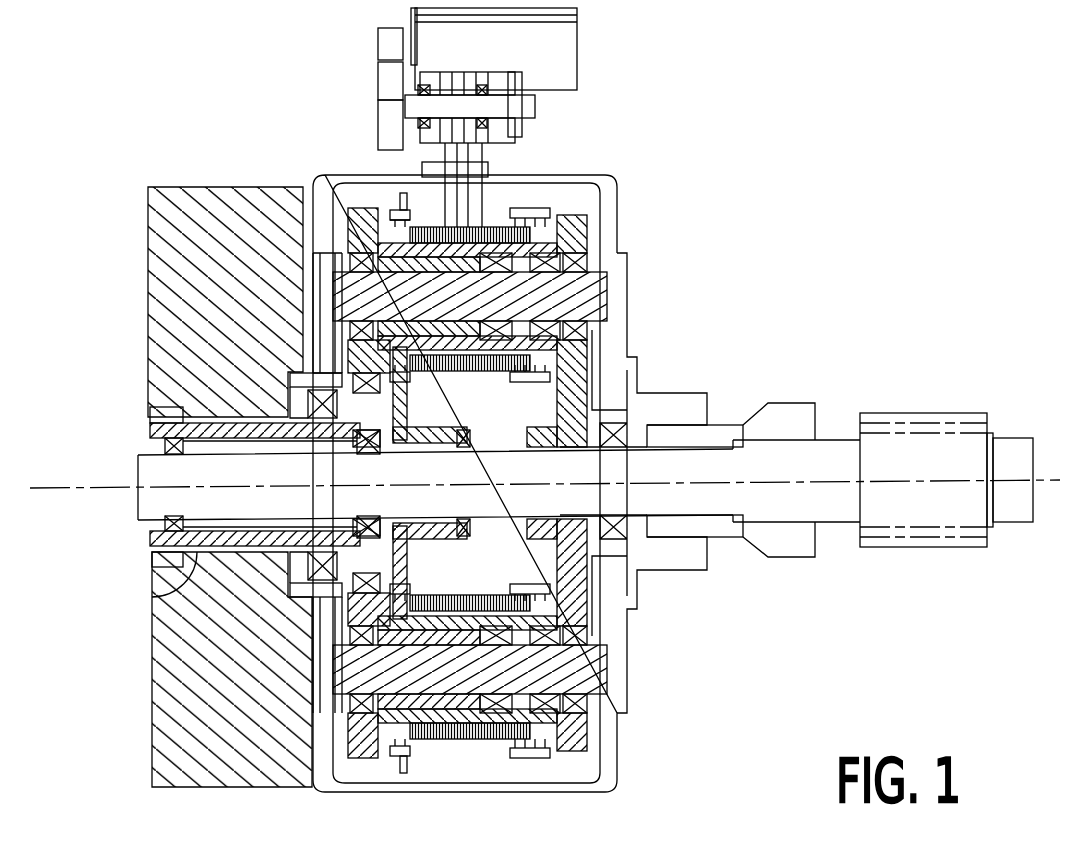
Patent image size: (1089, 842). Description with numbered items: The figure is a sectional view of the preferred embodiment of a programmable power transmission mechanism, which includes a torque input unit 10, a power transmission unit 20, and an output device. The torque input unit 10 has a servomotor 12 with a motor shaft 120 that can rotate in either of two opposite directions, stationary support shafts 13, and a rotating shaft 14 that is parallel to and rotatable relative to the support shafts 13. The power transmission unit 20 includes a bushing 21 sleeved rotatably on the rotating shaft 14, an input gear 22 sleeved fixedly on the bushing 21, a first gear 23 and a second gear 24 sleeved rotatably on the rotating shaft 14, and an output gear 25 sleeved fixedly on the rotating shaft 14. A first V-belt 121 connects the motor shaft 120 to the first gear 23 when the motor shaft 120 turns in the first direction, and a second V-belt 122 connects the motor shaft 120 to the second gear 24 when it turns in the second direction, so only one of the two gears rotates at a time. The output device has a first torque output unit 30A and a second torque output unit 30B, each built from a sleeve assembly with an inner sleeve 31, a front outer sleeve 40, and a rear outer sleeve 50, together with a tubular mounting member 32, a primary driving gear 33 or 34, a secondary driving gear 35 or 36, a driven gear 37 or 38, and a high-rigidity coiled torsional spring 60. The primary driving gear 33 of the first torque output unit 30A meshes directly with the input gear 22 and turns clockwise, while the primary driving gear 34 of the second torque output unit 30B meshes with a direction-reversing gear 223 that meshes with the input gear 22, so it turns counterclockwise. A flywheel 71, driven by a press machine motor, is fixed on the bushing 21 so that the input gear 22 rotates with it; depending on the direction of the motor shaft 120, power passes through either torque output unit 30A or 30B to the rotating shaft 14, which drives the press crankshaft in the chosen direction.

The torque input unit 10 is at (372, 102).
The servomotor 12 is at (558, 44).
The motor shaft 120 is at (535, 105).
The first V-belt 121 is at (628, 233).
The second V-belt 122 is at (340, 233).
The stationary support shaft 13 is at (490, 300).
The rotating shaft 14 is at (687, 488).
The power transmission unit 20 is at (282, 398).
The bushing 21 is at (195, 558).
The input gear 22 is at (325, 387).
The direction-reversing gear 223 is at (345, 340).
The first gear 23 is at (195, 428).
The second gear 24 is at (413, 415).
The output gear 25 is at (593, 578).
The first torque output unit 30A is at (479, 680).
The second torque output unit 30B is at (522, 266).
The inner sleeve 31 is at (448, 745).
The tubular mounting member 32 is at (547, 740).
The primary driving gear 33 is at (367, 762).
The primary driving gear 34 is at (362, 213).
The secondary driving gear 35 is at (393, 772).
The secondary driving gear 36 is at (333, 305).
The driven gear 37 is at (590, 748).
The driven gear 38 is at (590, 222).
The front outer sleeve 40 is at (435, 220).
The rear outer sleeve 50 is at (530, 208).
The coiled torsional spring 60 is at (487, 220).
The flywheel 71 is at (205, 770).